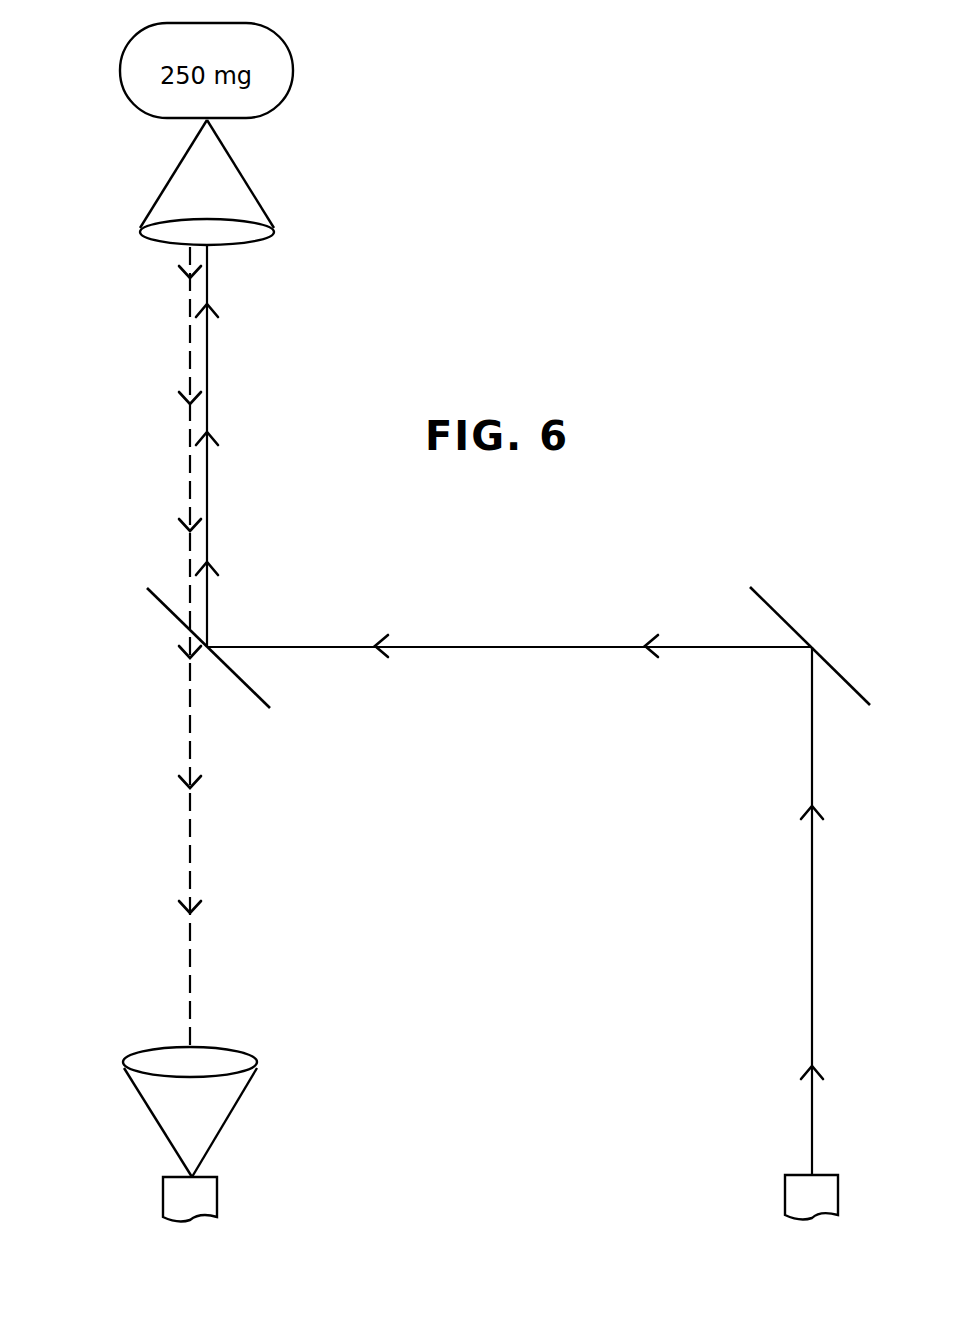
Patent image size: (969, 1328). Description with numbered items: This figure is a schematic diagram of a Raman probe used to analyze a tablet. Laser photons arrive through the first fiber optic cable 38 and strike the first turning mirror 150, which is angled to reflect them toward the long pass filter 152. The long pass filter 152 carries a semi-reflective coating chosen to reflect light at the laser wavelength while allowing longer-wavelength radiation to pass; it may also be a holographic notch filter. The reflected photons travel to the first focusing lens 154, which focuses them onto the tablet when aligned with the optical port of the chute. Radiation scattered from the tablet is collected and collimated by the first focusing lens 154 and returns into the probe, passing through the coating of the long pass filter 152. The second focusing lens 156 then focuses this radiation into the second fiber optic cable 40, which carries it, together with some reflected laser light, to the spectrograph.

The first focusing lens 154 is at (160, 232).
The long pass filter 152 is at (167, 608).
The first turning mirror 150 is at (778, 610).
The second focusing lens 156 is at (153, 1058).
The second fiber optic cable 40 is at (217, 1200).
The first fiber optic cable 38 is at (785, 1195).